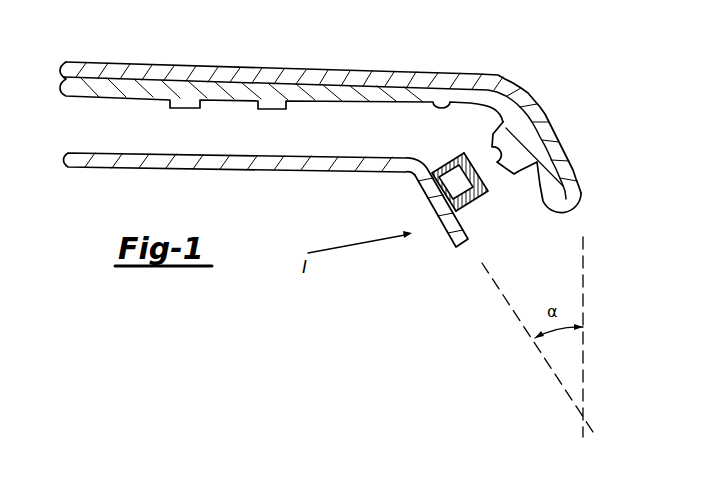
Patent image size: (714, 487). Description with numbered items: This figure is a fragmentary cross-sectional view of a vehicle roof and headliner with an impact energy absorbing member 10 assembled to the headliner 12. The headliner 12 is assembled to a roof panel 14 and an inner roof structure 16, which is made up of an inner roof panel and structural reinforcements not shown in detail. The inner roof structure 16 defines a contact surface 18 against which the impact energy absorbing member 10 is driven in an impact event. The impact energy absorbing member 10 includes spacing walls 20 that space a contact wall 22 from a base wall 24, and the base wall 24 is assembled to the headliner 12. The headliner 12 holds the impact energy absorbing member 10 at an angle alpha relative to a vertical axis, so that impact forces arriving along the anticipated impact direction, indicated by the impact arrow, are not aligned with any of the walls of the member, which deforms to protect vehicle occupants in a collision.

The impact energy absorbing member 10 is at (466, 217).
The headliner 12 is at (217, 168).
The roof panel 14 is at (368, 69).
The inner roof structure 16 is at (466, 95).
The contact surface 18 is at (513, 168).
The spacing walls 20 is at (443, 168).
The contact wall 22 is at (493, 193).
The base wall 24 is at (437, 225).